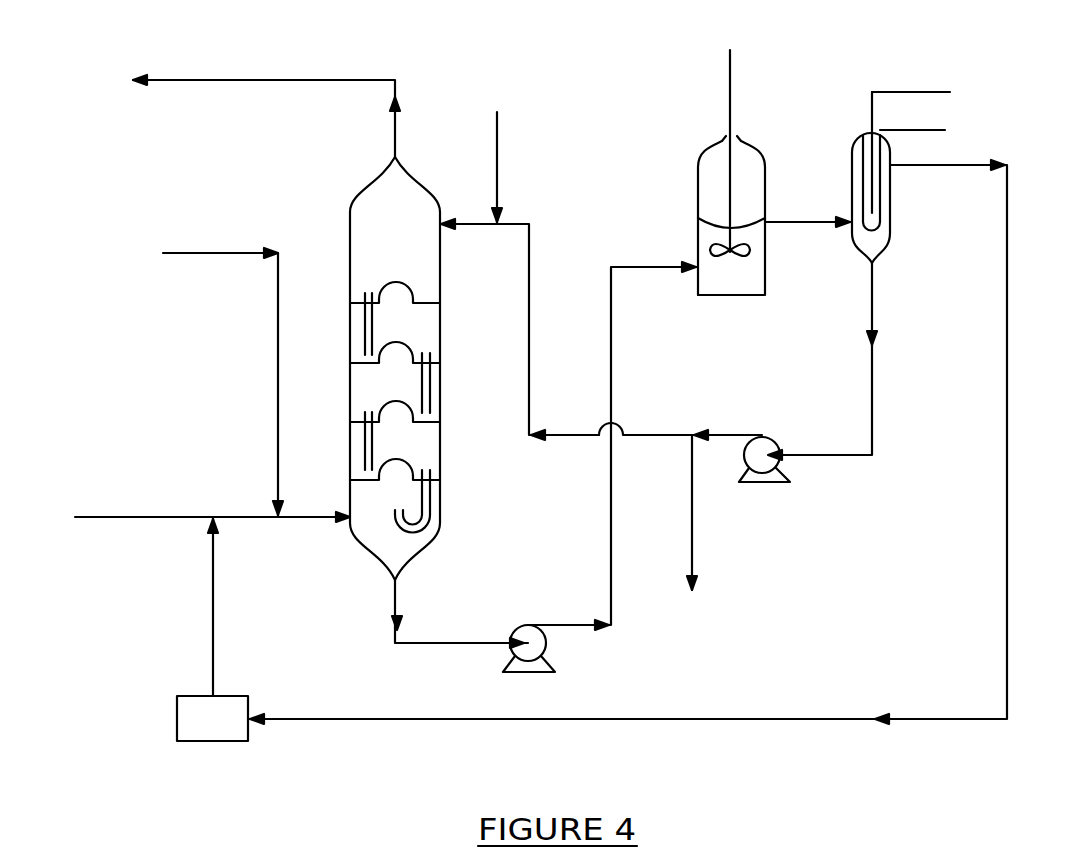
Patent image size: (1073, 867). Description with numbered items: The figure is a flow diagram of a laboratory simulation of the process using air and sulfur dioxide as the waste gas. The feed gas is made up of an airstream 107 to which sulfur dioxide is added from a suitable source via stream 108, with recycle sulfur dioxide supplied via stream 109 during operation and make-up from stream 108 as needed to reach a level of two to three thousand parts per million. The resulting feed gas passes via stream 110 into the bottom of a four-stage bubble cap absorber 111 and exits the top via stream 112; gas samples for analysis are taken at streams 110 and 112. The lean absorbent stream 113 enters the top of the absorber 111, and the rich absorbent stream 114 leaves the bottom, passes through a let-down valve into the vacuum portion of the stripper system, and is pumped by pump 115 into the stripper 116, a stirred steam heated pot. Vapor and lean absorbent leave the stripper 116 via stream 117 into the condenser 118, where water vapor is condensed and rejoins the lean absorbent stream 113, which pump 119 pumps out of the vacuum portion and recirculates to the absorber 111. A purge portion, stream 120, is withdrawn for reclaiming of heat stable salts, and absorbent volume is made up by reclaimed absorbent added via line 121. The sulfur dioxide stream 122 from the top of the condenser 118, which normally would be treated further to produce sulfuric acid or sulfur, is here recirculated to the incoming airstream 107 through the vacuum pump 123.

The airstream 107 is at (160, 518).
The sulfur dioxide stream 108 is at (278, 358).
The recycle sulfur dioxide stream 109 is at (213, 608).
The feed gas stream 110 is at (322, 518).
The bubble cap absorber 111 is at (441, 392).
The treated gas outlet stream 112 is at (350, 81).
The lean absorbent stream 113 is at (478, 226).
The rich absorbent stream 114 is at (458, 645).
The pump 115 is at (518, 628).
The stripper 116 is at (740, 296).
The stripper outlet stream 117 is at (797, 224).
The condenser 118 is at (890, 230).
The pump 119 is at (775, 440).
The purge stream 120 is at (692, 548).
The reclaimed absorbent line 121 is at (497, 142).
The SO2 stream 122 is at (1008, 338).
The vacuum pump 123 is at (212, 718).